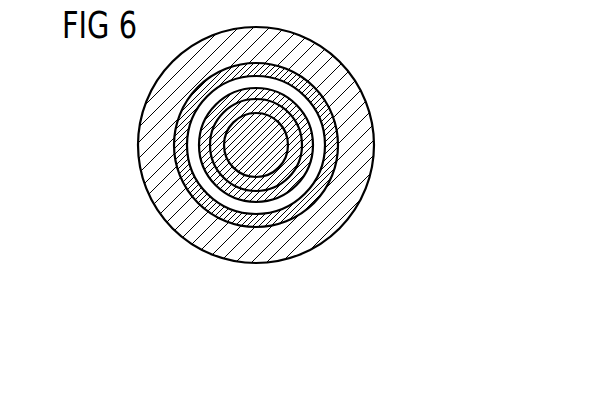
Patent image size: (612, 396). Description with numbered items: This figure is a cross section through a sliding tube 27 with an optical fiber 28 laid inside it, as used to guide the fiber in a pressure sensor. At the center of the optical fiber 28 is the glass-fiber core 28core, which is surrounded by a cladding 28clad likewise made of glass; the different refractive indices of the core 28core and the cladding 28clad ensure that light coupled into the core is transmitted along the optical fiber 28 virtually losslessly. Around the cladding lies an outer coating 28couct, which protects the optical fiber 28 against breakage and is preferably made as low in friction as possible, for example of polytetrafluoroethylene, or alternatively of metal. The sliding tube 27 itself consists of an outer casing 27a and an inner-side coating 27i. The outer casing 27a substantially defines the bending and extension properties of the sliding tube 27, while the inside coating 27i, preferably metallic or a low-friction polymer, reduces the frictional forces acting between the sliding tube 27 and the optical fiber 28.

The sliding tube 27 is at (299, 154).
The outer casing 27a is at (338, 216).
The inner-side coating 27i is at (297, 216).
The optical fiber 28 is at (233, 188).
The glass-fiber core 28core is at (173, 154).
The cladding 28clad is at (228, 172).
The outer coating 28couct is at (250, 200).